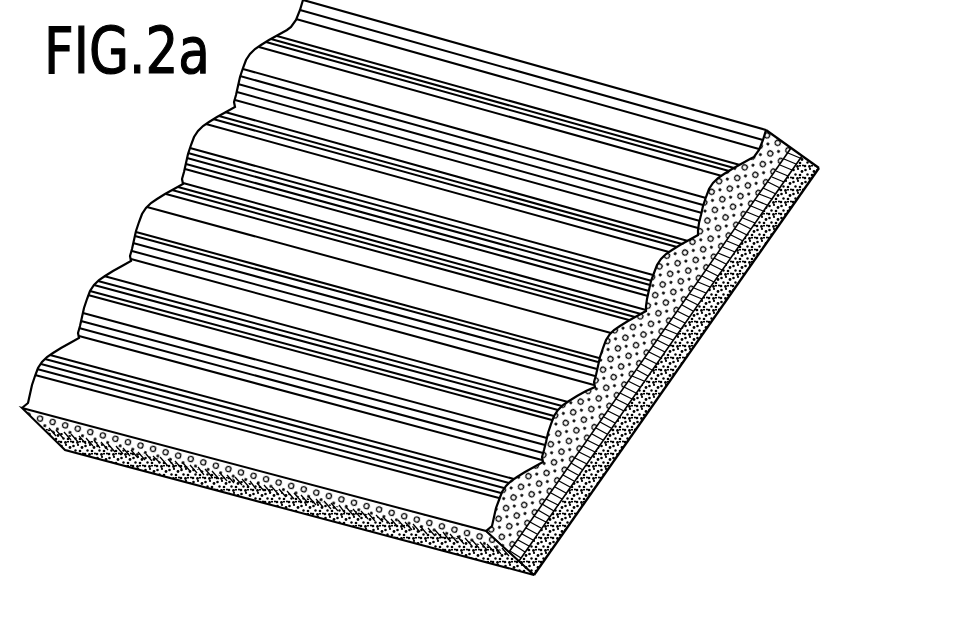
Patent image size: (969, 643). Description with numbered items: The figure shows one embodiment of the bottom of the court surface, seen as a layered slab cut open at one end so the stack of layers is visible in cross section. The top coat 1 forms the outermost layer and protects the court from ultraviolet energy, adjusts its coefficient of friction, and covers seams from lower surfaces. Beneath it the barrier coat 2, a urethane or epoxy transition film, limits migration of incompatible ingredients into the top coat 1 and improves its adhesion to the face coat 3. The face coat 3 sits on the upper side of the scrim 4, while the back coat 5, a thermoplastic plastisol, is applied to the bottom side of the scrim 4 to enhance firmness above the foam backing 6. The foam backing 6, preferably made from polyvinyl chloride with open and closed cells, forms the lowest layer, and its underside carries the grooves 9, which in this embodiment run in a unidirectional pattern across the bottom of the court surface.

The top coat 1 is at (740, 283).
The barrier coat 2 is at (816, 172).
The face coat 3 is at (808, 158).
The scrim 4 is at (803, 152).
The back coat 5 is at (795, 148).
The foam backing 6 is at (786, 138).
The grooves 9 is at (578, 105).